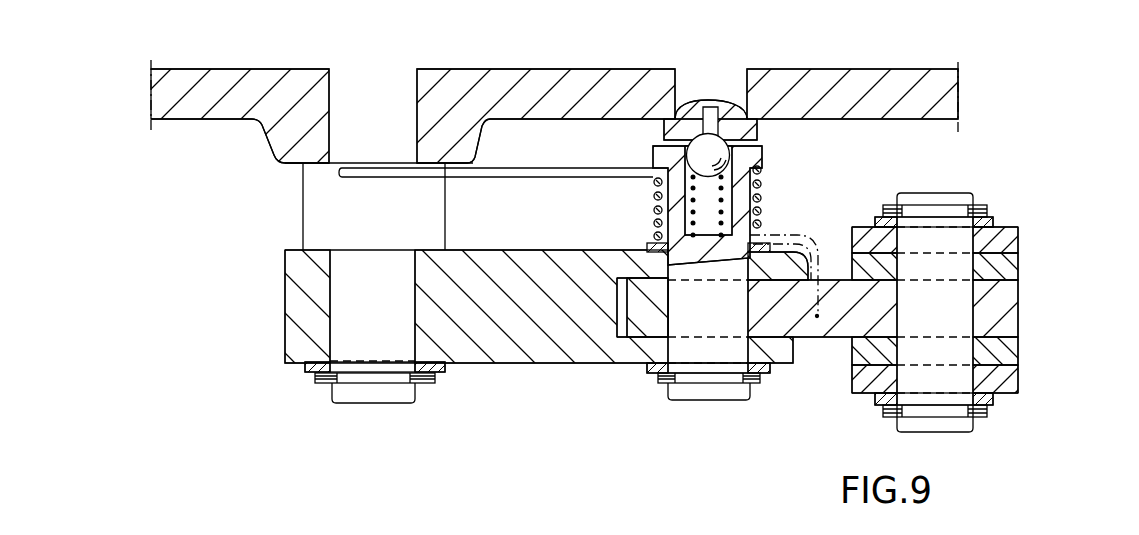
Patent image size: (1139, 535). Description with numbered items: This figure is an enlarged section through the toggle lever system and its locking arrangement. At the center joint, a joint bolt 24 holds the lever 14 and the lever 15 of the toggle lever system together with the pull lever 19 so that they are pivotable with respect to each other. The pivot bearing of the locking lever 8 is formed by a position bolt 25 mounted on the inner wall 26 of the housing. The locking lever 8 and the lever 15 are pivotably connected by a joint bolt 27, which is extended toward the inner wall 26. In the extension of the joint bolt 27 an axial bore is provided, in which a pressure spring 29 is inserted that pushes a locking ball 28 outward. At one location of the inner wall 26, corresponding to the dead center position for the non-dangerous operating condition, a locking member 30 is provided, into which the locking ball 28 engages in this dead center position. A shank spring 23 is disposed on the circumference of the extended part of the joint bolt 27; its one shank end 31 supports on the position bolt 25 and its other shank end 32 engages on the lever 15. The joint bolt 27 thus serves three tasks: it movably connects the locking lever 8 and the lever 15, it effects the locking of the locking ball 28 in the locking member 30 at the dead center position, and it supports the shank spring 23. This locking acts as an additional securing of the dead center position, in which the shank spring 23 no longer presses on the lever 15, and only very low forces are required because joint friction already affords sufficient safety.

The locking lever 8 is at (567, 340).
The lever 14 is at (1005, 268).
The lever 15 is at (1005, 300).
The pull lever 19 is at (1005, 380).
The shank spring 23 is at (760, 193).
The joint bolt 24 is at (947, 200).
The position bolt 25 is at (348, 352).
The inner wall 26 is at (803, 100).
The joint bolt 27 is at (720, 355).
The locking ball 28 is at (697, 140).
The pressure spring 29 is at (693, 188).
The locking member 30 is at (727, 88).
The shank end 31 is at (528, 173).
The shank end 32 is at (817, 262).